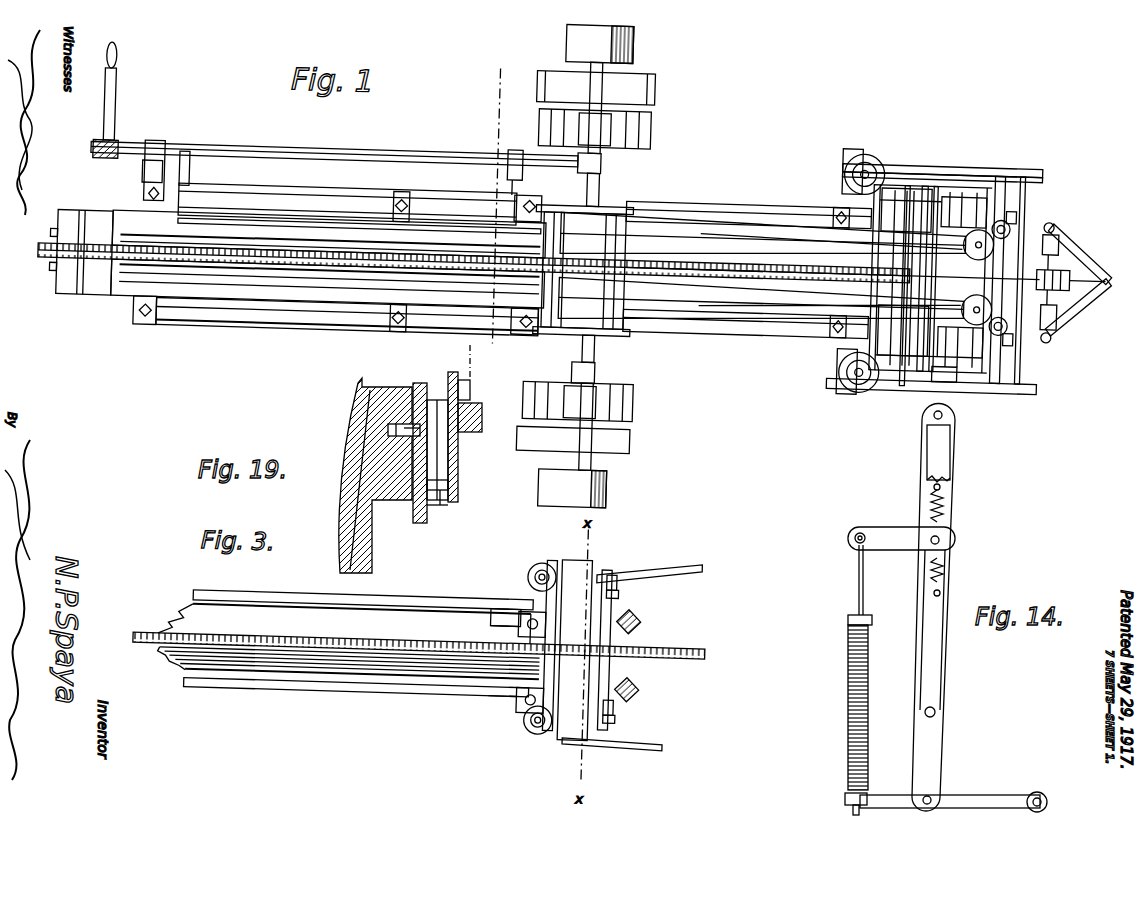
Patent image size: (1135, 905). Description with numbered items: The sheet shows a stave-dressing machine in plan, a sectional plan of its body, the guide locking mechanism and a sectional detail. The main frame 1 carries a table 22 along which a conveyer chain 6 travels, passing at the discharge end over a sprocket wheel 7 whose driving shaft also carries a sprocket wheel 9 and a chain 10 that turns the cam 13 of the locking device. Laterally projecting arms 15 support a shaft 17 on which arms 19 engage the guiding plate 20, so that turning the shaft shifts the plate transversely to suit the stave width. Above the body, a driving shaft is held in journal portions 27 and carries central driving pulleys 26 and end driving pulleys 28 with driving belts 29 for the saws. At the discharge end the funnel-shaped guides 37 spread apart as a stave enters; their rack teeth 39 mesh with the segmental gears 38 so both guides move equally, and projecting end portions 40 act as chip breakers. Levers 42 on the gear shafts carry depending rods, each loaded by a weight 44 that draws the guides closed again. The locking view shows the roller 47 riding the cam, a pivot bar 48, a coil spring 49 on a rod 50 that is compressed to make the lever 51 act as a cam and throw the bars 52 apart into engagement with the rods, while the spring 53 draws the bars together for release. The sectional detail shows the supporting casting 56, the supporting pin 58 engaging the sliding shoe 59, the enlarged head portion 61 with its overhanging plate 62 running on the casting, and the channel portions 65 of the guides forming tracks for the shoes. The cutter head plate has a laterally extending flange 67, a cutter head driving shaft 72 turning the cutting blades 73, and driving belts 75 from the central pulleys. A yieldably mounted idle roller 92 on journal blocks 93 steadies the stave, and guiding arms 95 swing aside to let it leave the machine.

In FIG. 3, the main frame 1 is at (432, 686).
In FIG. 1, the conveyer chain 6 is at (204, 258).
In FIG. 3, the conveyer chain 6 is at (290, 646).
In FIG. 1, the sprocket wheel 7 is at (493, 204).
In FIG. 19, the sprocket wheel 7 is at (481, 360).
In FIG. 1, the sprocket wheel 9 is at (1003, 146).
In FIG. 1, the chain 10 is at (960, 140).
In FIG. 1, the cam 13 is at (111, 110).
In FIG. 1, the laterally projecting arms 15 is at (140, 168).
In FIG. 1, the shaft 17 is at (378, 140).
In FIG. 1, the arms 19 is at (165, 140).
In FIG. 1, the guiding plate 20 is at (300, 212).
In FIG. 1, the table 22 is at (170, 285).
In FIG. 3, the table 22 is at (374, 668).
In FIG. 1, the driving pulleys 26 is at (632, 194).
In FIG. 1, the journal portions 27 is at (600, 146).
In FIG. 1, the driving pulleys 28 is at (630, 30).
In FIG. 1, the driving belts 29 is at (652, 75).
In FIG. 1, the funnel-shaped guides 37 is at (905, 366).
In FIG. 19, the funnel-shaped guides 37 is at (482, 410).
In FIG. 3, the funnel-shaped guides 37 is at (550, 720).
In FIG. 1, the segmental gears 38 is at (866, 258).
In FIG. 19, the rack teeth 39 is at (470, 388).
In FIG. 3, the projecting end portions 40 is at (524, 612).
In FIG. 1, the levers 42 is at (845, 186).
In FIG. 3, the levers 42 is at (526, 574).
In FIG. 1, the weight 44 is at (863, 130).
In FIG. 3, the weight 44 is at (535, 556).
In FIG. 14, the roller 47 is at (1034, 792).
In FIG. 14, the bar 48 is at (932, 760).
In FIG. 14, the coil spring 49 is at (847, 700).
In FIG. 1, the rod 50 is at (840, 148).
In FIG. 14, the rod 50 is at (858, 588).
In FIG. 14, the lever 51 is at (890, 527).
In FIG. 14, the bars 52 is at (942, 451).
In FIG. 14, the spring 53 is at (948, 510).
In FIG. 1, the supporting casting 56 is at (952, 356).
In FIG. 19, the supporting casting 56 is at (448, 485).
In FIG. 19, the supporting pin 58 is at (388, 428).
In FIG. 19, the sliding shoe 59 is at (448, 380).
In FIG. 1, the enlarged head portion 61 is at (1015, 186).
In FIG. 19, the enlarged head portion 61 is at (444, 455).
In FIG. 3, the enlarged head portion 61 is at (620, 560).
In FIG. 1, the overhanging plate 62 is at (992, 196).
In FIG. 19, the overhanging plate 62 is at (421, 383).
In FIG. 3, the overhanging plate 62 is at (702, 549).
In FIG. 1, the channel portions 65 is at (872, 218).
In FIG. 19, the channel portions 65 is at (447, 501).
In FIG. 3, the channel portions 65 is at (590, 548).
In FIG. 1, the laterally extending flange 67 is at (992, 141).
In FIG. 3, the laterally extending flange 67 is at (616, 568).
In FIG. 1, the cutter head driving shaft 72 is at (994, 217).
In FIG. 19, the cutter head driving shaft 72 is at (348, 543).
In FIG. 3, the cutting blades 73 is at (641, 607).
In FIG. 1, the driving belts 75 is at (722, 200).
In FIG. 1, the yieldably mounted idle roller 92 is at (1070, 250).
In FIG. 1, the journal blocks 93 is at (1055, 205).
In FIG. 1, the guiding arms 95 is at (1085, 214).